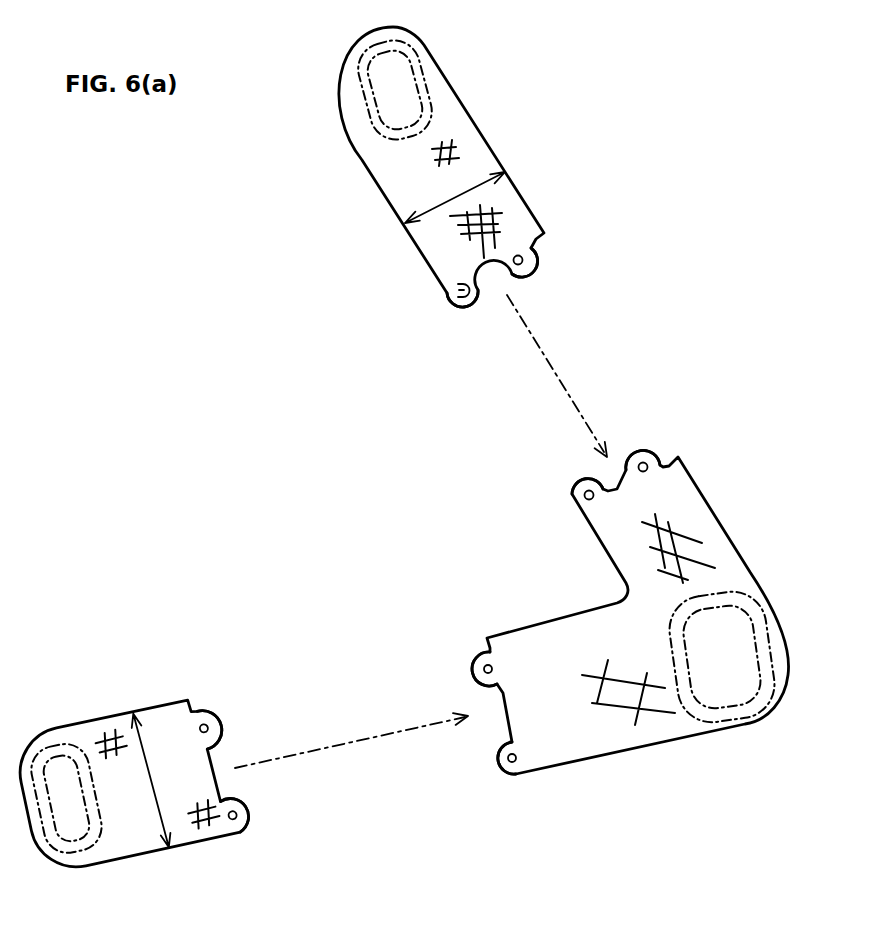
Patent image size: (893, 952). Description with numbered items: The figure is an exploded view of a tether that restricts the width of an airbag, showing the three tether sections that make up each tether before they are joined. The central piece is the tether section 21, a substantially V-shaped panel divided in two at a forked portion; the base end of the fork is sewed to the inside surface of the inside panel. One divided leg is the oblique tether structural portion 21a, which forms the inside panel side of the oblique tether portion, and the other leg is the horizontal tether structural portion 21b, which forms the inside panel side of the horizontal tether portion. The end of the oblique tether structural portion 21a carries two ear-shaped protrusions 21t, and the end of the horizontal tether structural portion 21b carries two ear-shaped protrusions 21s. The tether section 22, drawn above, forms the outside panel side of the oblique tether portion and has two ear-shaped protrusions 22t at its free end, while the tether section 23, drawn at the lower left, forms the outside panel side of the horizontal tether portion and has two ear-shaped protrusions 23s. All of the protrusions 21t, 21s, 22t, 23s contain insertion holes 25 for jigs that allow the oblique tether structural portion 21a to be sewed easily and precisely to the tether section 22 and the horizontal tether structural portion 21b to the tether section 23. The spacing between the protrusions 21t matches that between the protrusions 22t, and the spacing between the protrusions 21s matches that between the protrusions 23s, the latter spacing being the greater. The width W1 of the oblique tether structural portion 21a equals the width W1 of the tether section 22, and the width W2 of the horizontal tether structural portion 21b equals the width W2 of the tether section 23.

The tether section 21 is at (673, 636).
The oblique tether structural portion 21a is at (686, 498).
The horizontal tether structural portion 21b is at (568, 760).
The ear-shaped protrusions 21t is at (637, 450).
The ear-shaped protrusions 21s is at (473, 665).
The tether section 22 is at (455, 167).
The ear-shaped protrusions 22t is at (528, 278).
The tether section 23 is at (132, 807).
The ear-shaped protrusions 23s is at (222, 732).
The insertion holes 25 is at (523, 260).
The width of oblique tether structural portion and tether section 22 W1 is at (455, 197).
The width of horizontal tether structural portion and tether section 23 W2 is at (160, 852).